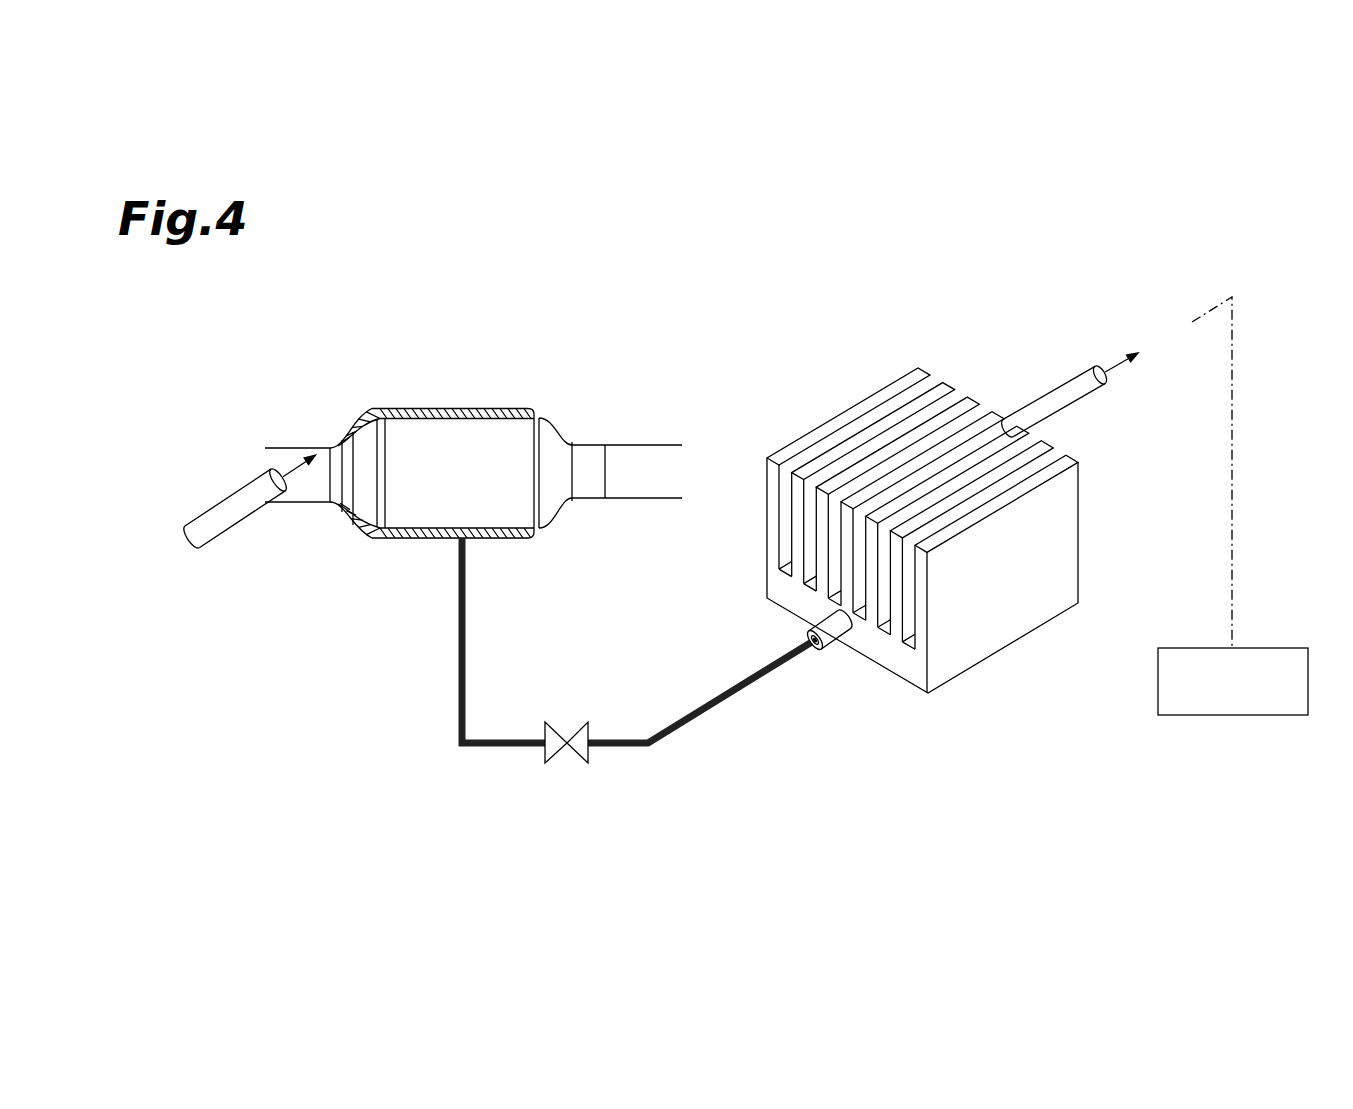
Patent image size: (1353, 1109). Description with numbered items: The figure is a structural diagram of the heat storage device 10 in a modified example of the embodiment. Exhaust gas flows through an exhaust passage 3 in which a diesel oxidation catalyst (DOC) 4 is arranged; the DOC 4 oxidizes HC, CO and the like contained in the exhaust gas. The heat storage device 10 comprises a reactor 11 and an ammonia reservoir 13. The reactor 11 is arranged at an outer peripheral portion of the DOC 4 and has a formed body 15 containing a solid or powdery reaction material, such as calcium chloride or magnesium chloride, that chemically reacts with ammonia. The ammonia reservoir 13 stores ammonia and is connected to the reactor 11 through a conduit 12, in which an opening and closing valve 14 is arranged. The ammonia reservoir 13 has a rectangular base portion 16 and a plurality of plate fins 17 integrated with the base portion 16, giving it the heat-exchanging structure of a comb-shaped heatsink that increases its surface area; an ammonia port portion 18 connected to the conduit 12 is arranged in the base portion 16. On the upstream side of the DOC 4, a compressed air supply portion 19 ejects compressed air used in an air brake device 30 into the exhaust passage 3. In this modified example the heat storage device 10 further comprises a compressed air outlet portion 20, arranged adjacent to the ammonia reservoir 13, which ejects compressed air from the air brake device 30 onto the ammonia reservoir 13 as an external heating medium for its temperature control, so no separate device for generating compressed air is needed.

The exhaust passage 3 is at (288, 457).
The diesel oxidation catalyst (DOC) 4 is at (488, 432).
The heat storage device 10 is at (673, 367).
The reactor 11 is at (378, 407).
The conduit 12 is at (458, 680).
The ammonia reservoir 13 is at (966, 527).
The opening and closing valve 14 is at (568, 750).
The formed body 15 is at (430, 408).
The base portion 16 is at (903, 665).
The plate fins 17 is at (918, 372).
The ammonia port portion 18 is at (838, 648).
The compressed air supply portion 19 is at (210, 518).
The compressed air outlet portion 20 is at (1140, 347).
The air brake device 30 is at (1254, 716).